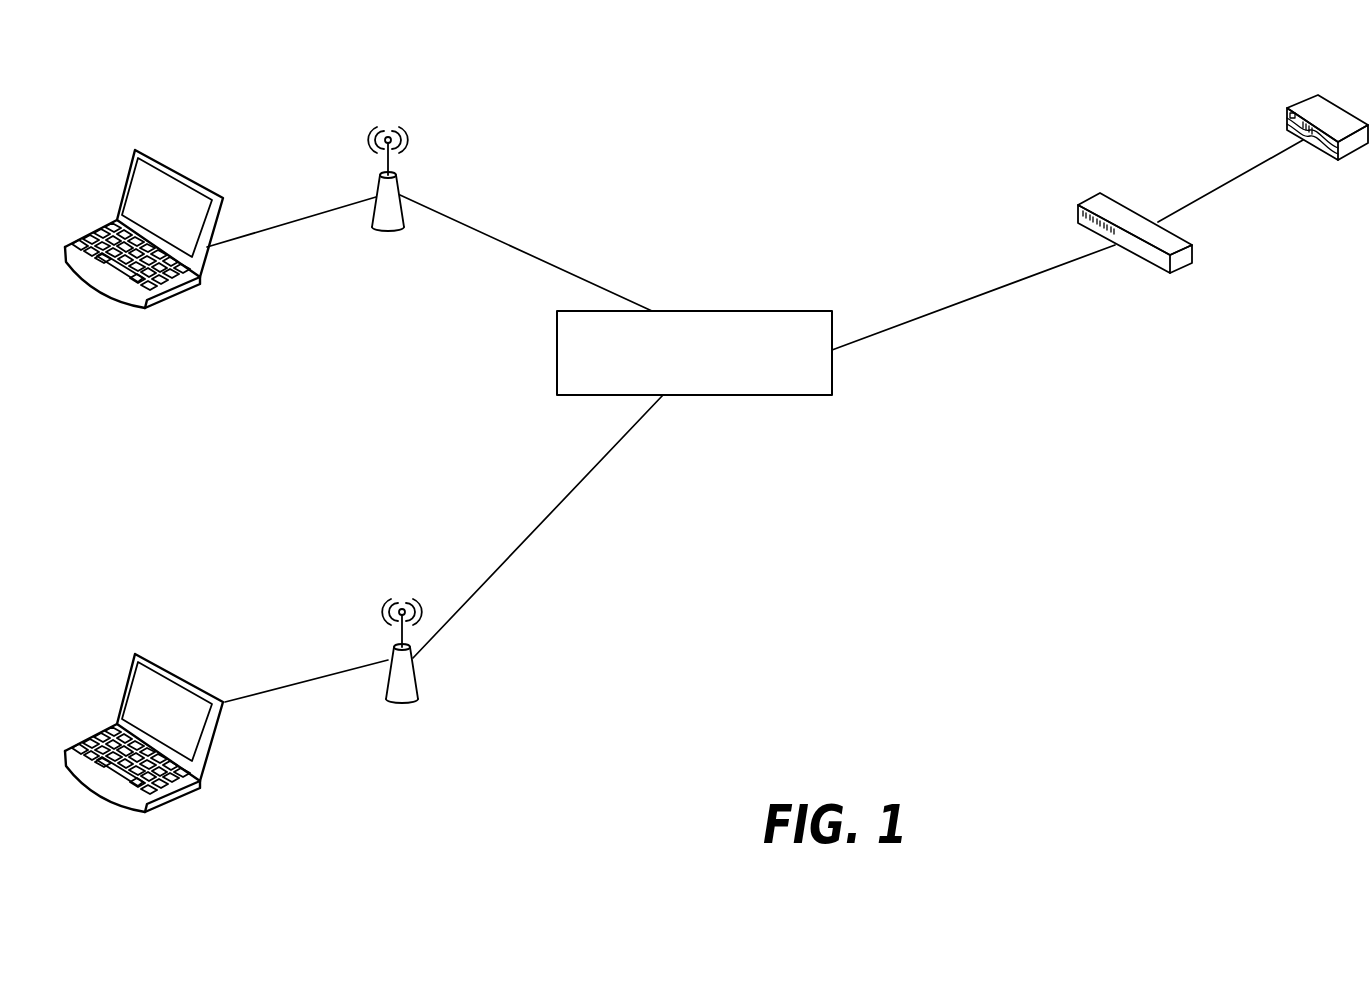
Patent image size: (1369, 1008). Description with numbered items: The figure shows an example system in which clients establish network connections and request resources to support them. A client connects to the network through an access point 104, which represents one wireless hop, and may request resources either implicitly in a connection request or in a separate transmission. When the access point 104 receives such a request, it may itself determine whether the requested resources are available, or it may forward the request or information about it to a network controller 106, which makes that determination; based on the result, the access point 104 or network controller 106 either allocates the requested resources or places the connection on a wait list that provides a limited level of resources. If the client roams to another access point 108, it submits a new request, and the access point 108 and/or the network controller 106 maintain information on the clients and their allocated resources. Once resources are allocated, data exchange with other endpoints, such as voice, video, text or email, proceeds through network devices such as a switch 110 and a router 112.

The Access Point (AP) 104 is at (393, 648).
The network controller 106 is at (710, 310).
The AP 108 is at (378, 180).
The switch 110 is at (1092, 202).
The router 112 is at (1298, 108).